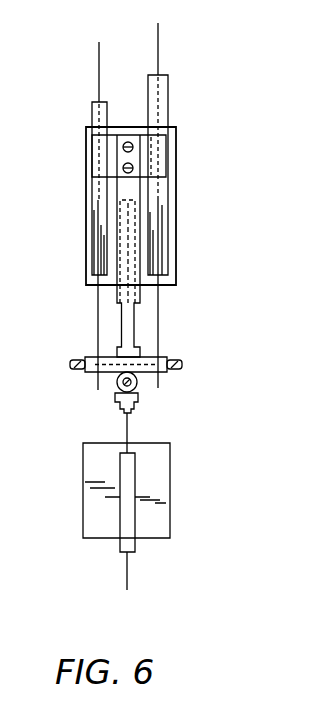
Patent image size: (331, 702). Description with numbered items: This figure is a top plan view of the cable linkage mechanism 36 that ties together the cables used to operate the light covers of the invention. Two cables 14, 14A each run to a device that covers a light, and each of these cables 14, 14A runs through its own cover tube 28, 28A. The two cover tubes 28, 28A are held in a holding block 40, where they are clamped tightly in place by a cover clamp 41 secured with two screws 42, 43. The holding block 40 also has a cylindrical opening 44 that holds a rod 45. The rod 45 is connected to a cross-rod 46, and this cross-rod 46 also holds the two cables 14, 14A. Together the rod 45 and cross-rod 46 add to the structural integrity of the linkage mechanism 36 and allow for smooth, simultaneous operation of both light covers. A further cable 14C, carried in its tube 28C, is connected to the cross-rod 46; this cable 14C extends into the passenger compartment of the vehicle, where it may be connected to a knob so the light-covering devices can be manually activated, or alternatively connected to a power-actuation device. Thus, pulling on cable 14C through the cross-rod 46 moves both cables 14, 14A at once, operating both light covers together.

The cable 14 is at (99, 62).
The cable 14A is at (158, 42).
The cable 14C is at (127, 425).
The cover tube 28 is at (92, 113).
The cover tube 28A is at (168, 92).
The tube 28C is at (132, 480).
The cable linkage mechanism 36 is at (184, 296).
The holding block 40 is at (176, 199).
The cover clamp 41 is at (166, 155).
The screw 42 is at (123, 168).
The screw 43 is at (123, 147).
The cylindrical opening 44 is at (120, 244).
The rod 45 is at (133, 323).
The cross-rod 46 is at (146, 373).